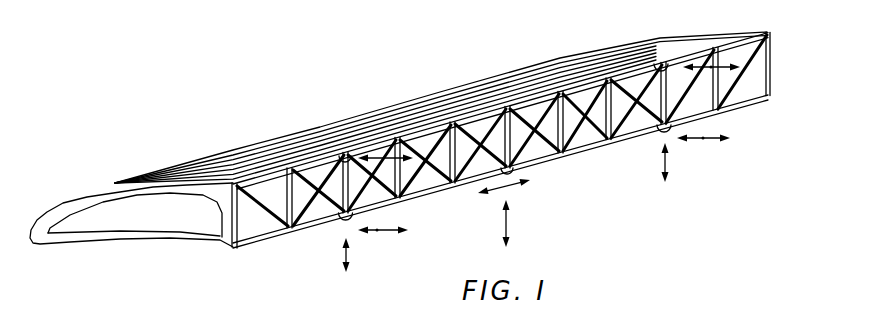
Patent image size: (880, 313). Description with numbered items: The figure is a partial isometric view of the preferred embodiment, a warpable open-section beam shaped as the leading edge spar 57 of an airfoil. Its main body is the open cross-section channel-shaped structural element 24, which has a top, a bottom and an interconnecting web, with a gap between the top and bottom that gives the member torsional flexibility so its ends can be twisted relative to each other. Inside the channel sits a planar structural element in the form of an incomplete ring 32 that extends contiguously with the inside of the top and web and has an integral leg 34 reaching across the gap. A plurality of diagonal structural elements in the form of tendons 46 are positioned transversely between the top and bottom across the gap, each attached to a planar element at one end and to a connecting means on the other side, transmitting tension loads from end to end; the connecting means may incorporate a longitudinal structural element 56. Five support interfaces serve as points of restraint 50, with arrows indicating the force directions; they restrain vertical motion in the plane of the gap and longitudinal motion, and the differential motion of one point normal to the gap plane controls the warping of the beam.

The channel-shaped structural element 24 is at (298, 138).
The incomplete ring 32 is at (116, 183).
The leg 34 is at (215, 215).
The tendon 46 is at (325, 193).
The points of restraint 50 is at (347, 157).
The longitudinal structural element 56 is at (463, 184).
The leading edge spar 57 is at (205, 118).